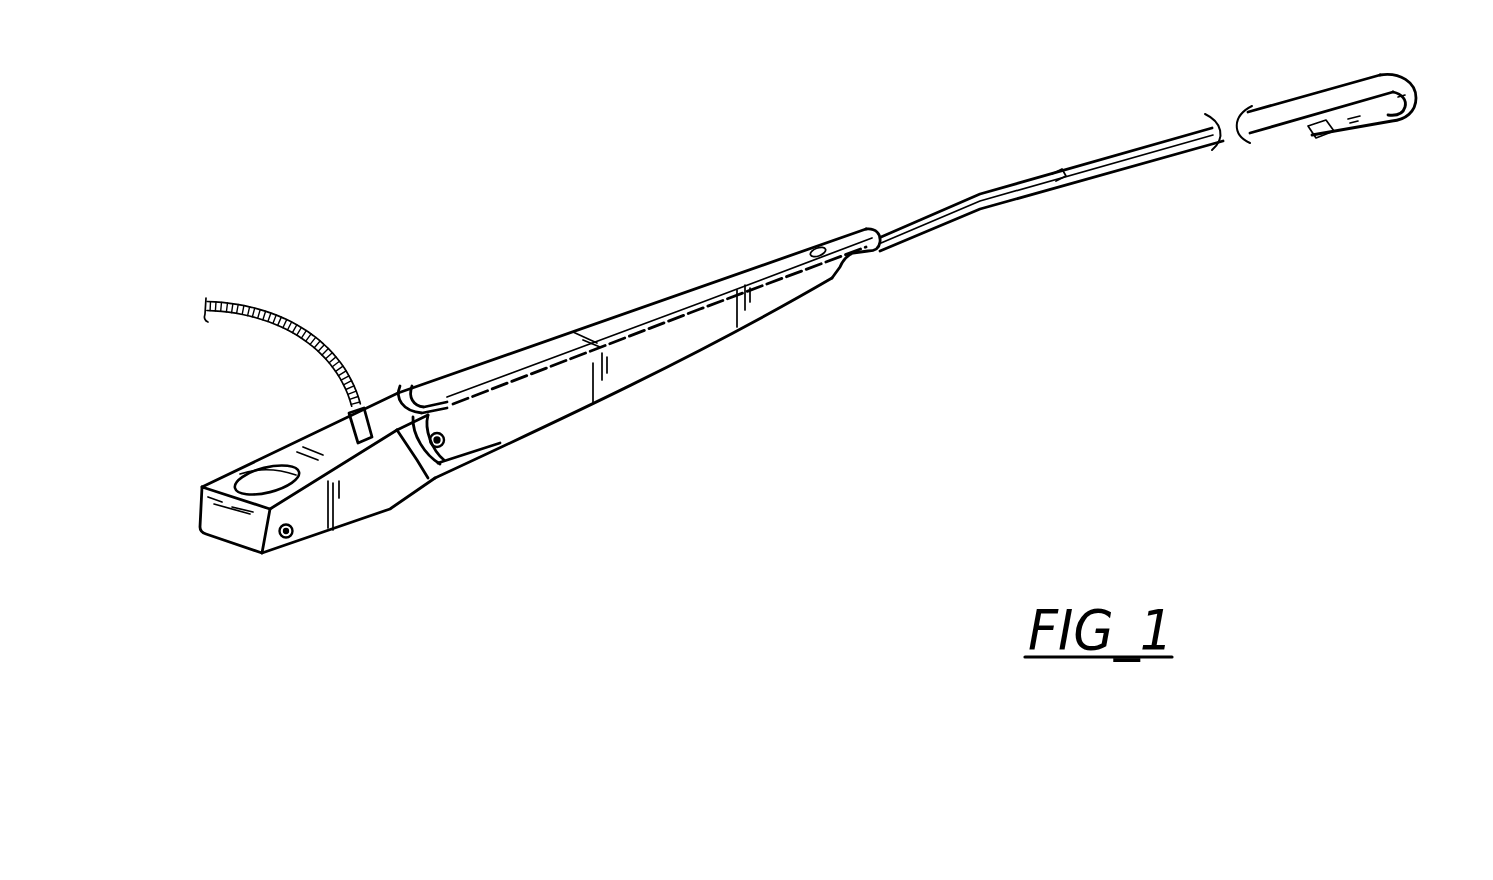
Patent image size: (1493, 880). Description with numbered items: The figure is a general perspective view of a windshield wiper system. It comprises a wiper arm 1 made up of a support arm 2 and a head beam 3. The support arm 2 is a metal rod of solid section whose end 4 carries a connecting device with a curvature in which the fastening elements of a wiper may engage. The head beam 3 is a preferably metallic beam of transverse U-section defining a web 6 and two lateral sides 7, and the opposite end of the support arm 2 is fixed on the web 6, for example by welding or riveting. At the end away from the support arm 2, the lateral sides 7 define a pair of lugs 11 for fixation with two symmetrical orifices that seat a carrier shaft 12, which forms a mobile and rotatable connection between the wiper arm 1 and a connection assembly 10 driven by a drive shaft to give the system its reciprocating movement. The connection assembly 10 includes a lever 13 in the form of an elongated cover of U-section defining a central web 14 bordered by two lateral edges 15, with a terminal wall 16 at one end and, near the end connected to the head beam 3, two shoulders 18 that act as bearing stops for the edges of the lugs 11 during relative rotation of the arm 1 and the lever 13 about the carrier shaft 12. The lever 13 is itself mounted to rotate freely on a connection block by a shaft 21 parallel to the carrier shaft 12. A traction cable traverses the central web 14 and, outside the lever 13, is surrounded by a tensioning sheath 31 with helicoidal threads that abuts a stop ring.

The wiper arm 1 is at (813, 160).
The support arm 2 is at (1107, 158).
The head beam 3 is at (647, 288).
The end of the support arm 4 is at (1400, 118).
The web 6 is at (537, 350).
The lateral sides 7 is at (618, 375).
The connection assembly 10 is at (263, 583).
The lugs for fixation 11 is at (462, 463).
The carrier shaft 12 is at (447, 443).
The lever 13 is at (380, 388).
The central web 14 is at (325, 447).
The lateral edges 15 is at (357, 507).
The terminal wall 16 is at (233, 530).
The shoulders 18 is at (450, 473).
The shaft 21 is at (287, 533).
The tensioning sheath 31 is at (248, 300).